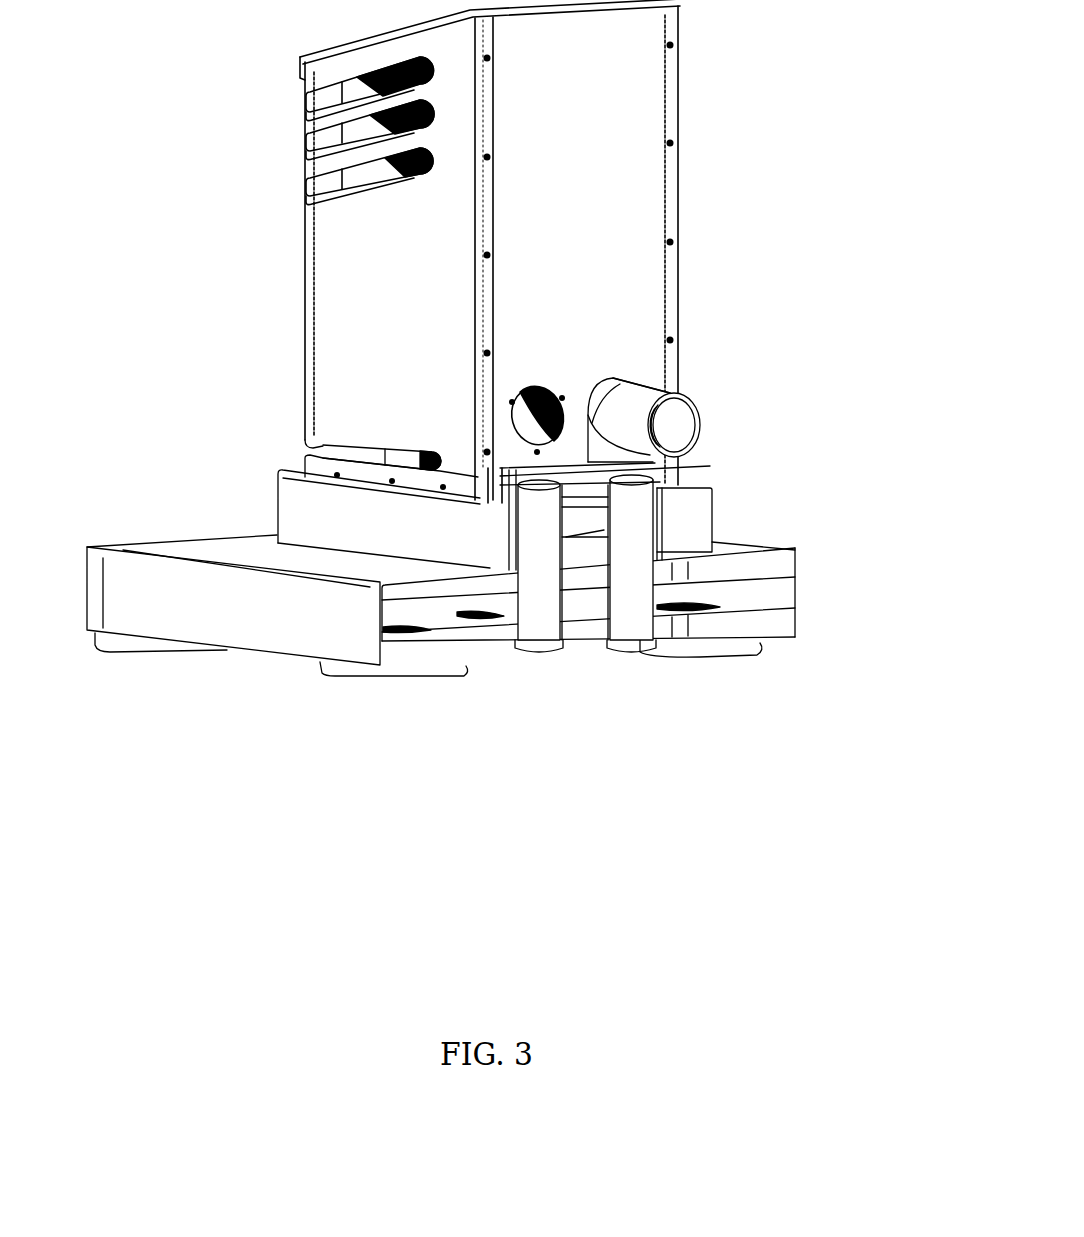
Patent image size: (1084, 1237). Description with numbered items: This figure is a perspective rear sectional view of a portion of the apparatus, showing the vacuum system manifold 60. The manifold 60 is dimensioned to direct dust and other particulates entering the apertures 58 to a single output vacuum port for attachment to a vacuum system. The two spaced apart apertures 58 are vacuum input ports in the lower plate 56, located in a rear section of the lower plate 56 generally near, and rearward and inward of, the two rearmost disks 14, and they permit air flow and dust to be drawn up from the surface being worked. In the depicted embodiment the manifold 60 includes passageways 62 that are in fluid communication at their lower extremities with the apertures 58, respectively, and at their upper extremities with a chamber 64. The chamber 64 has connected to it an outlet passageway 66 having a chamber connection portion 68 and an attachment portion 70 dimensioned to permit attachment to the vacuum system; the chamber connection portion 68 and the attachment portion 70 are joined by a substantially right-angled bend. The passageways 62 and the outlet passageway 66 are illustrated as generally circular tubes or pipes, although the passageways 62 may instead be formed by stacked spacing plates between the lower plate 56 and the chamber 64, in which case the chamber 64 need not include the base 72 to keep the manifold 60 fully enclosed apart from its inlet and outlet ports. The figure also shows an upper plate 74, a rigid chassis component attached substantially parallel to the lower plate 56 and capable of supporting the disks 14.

The disks 14 is at (353, 674).
The lower plate 56 is at (745, 625).
The apertures 58 is at (542, 642).
The manifold 60 is at (505, 468).
The passageways 62 is at (540, 600).
The chamber 64 is at (588, 477).
The outlet passageway 66 is at (620, 392).
The chamber connection portion 68 is at (607, 450).
The attachment portion 70 is at (643, 393).
The base 72 is at (578, 487).
The upper plate 74 is at (755, 570).